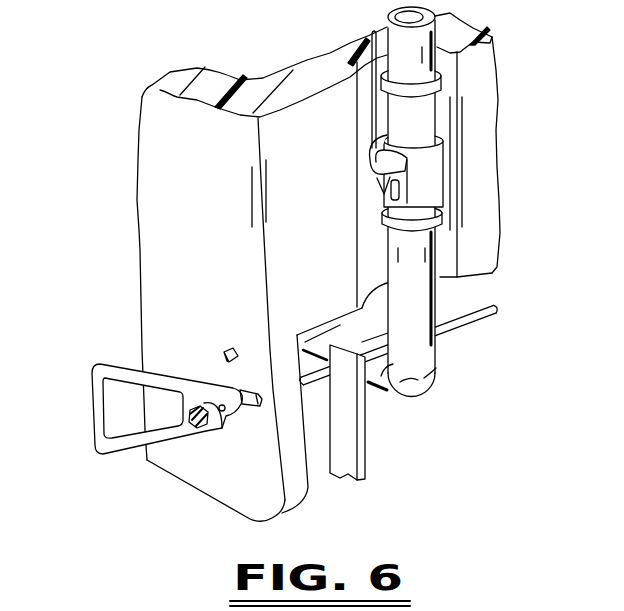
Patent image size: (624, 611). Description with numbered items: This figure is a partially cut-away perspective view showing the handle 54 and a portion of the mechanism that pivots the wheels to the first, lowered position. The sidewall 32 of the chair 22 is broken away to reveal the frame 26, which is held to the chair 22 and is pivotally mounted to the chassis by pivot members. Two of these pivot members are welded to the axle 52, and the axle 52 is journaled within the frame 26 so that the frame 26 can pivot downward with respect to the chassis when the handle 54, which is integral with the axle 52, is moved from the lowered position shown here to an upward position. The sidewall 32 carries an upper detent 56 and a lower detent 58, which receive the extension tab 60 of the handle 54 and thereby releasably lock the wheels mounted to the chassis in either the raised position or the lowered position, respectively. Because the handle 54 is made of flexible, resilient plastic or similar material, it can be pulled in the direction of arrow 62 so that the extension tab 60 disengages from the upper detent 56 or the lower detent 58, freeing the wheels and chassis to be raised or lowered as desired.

The chair 22 is at (512, 128).
The frame 26 is at (424, 388).
The sidewall 32 is at (201, 189).
The axle 52 is at (473, 323).
The handle 54 is at (121, 446).
The upper detent 56 is at (221, 352).
The lower detent 58 is at (210, 424).
The extension tab 60 is at (198, 429).
The arrow 62 is at (80, 370).